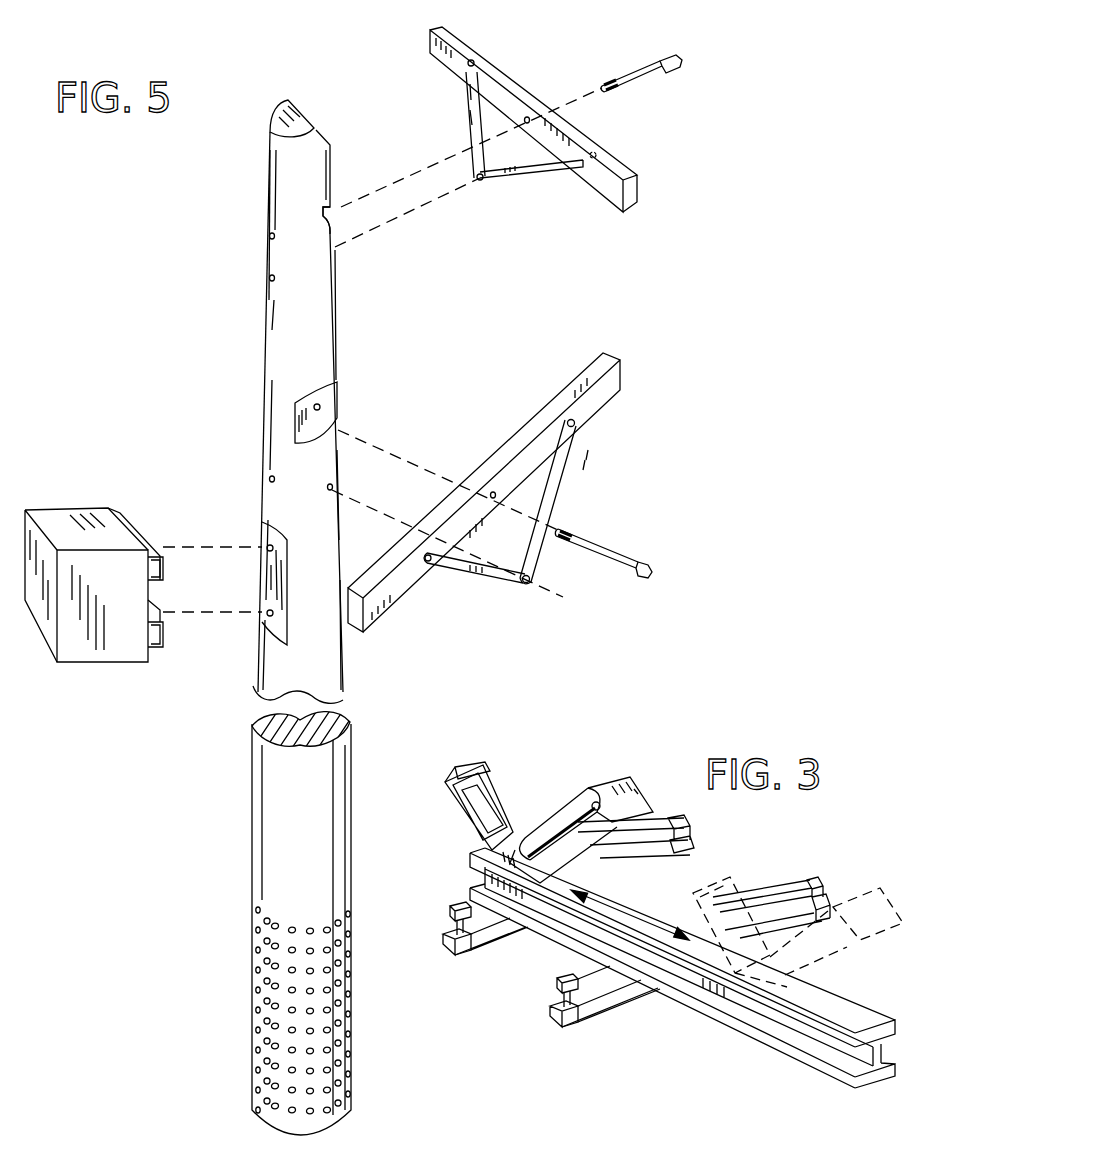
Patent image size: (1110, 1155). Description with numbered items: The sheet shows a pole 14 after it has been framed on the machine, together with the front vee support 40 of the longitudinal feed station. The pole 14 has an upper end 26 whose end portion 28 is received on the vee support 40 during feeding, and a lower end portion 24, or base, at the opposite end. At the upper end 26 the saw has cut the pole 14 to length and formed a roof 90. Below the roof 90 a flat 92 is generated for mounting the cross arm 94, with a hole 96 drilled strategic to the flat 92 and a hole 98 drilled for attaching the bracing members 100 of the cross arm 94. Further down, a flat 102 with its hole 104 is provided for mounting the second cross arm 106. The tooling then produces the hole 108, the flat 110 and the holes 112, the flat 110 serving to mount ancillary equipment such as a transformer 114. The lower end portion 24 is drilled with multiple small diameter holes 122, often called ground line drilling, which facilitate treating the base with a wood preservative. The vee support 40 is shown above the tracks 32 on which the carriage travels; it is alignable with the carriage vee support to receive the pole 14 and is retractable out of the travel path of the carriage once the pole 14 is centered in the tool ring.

In FIG. 5, the pole 14 is at (260, 772).
In FIG. 5, the lower end portion 24 is at (231, 1009).
In FIG. 5, the upper end 26 is at (305, 118).
In FIG. 5, the end portion 28 is at (270, 172).
In FIG. 3, the tracks 32 is at (558, 982).
In FIG. 3, the vee support 40 is at (560, 812).
In FIG. 5, the roof 90 is at (283, 118).
In FIG. 5, the flat 92 is at (330, 216).
In FIG. 5, the cross arm 94 is at (522, 93).
In FIG. 5, the hole 96 is at (270, 240).
In FIG. 5, the hole 98 is at (268, 281).
In FIG. 5, the bracing members 100 is at (470, 113).
In FIG. 5, the flat 102 is at (295, 432).
In FIG. 5, the hole 104 is at (322, 405).
In FIG. 5, the cross arm 106 is at (548, 412).
In FIG. 5, the hole 108 is at (268, 480).
In FIG. 5, the flat 110 is at (272, 573).
In FIG. 5, the holes 112 is at (267, 547).
In FIG. 5, the transformer 114 is at (72, 527).
In FIG. 5, the small diameter holes 122 is at (267, 1047).